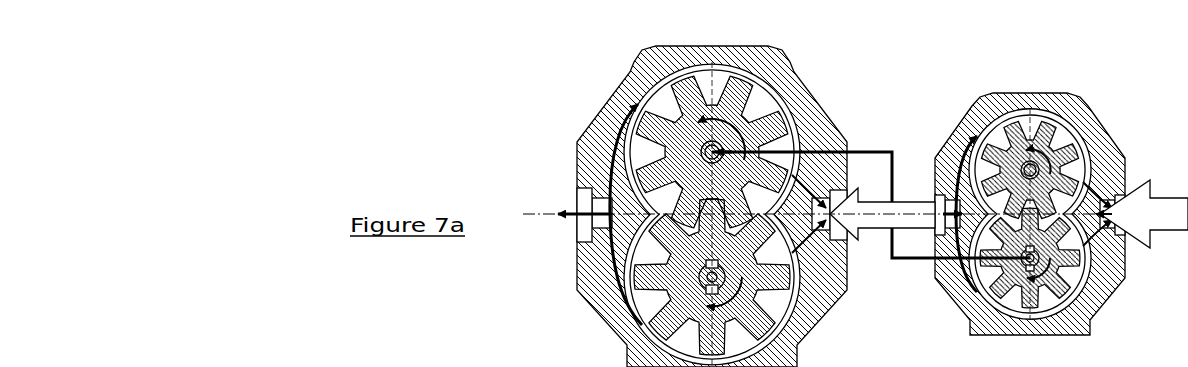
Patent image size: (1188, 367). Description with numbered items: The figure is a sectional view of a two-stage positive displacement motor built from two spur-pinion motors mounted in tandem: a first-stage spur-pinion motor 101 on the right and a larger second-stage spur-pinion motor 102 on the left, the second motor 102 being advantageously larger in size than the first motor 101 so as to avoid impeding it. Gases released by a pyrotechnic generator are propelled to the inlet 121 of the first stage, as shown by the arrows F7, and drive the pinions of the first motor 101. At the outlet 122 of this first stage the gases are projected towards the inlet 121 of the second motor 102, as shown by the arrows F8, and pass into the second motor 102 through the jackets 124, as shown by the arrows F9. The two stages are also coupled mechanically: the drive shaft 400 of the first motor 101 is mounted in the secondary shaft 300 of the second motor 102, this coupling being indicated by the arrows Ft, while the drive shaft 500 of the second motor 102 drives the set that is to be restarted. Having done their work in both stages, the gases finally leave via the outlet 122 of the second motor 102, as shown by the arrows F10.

The spur-pinion motor 101 is at (1062, 91).
The spur-pinion motor 102 is at (822, 94).
The inlet 121 is at (847, 152).
The outlet 122 is at (581, 234).
The jackets 124 is at (749, 72).
The secondary shaft 300 is at (710, 148).
The drive shaft 400 is at (1026, 261).
The drive shaft 500 is at (708, 280).
The arrows F7 is at (1155, 195).
The arrows F8 is at (882, 220).
The arrows F9 is at (846, 262).
The arrows F10 is at (576, 211).
The arrows Ft is at (893, 158).